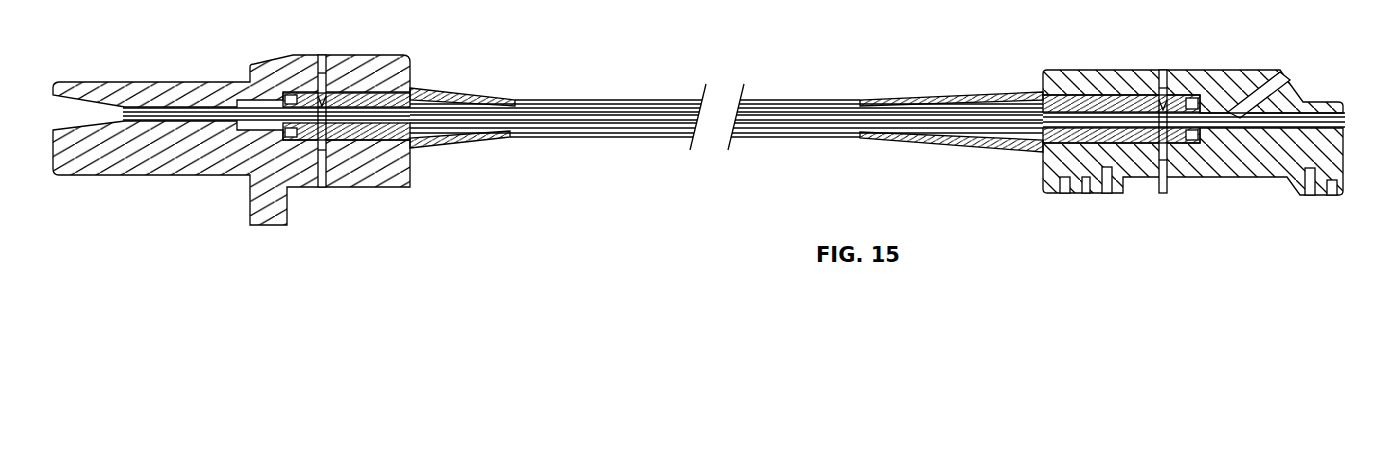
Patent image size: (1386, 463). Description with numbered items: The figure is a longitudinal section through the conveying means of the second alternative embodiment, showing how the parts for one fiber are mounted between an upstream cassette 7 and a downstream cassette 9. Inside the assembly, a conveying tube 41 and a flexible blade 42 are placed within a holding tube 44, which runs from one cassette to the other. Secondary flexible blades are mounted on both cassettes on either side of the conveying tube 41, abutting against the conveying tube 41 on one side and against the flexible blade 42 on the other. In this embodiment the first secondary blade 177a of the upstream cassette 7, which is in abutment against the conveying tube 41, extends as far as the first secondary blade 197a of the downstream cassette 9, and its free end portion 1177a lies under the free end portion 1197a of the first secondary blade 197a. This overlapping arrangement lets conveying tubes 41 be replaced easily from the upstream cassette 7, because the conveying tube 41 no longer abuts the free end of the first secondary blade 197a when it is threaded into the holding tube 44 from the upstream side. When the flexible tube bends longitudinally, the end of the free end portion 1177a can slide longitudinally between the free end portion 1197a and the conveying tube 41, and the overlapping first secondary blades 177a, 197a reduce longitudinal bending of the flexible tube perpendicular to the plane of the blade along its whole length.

The downstream cassette 9 is at (169, 82).
The upstream cassette 7 is at (1101, 70).
The conveying tube 41 is at (432, 128).
The flexible blade 42 is at (650, 130).
The holding tube 44 is at (823, 140).
The first secondary blade of the downstream cassette 197a is at (522, 104).
The free end portion of the first secondary blade of the downstream cassette 1197a is at (556, 110).
The free end portion of the first secondary blade of the upstream cassette 1177a is at (555, 125).
The first secondary blade of the upstream cassette 177a is at (823, 108).